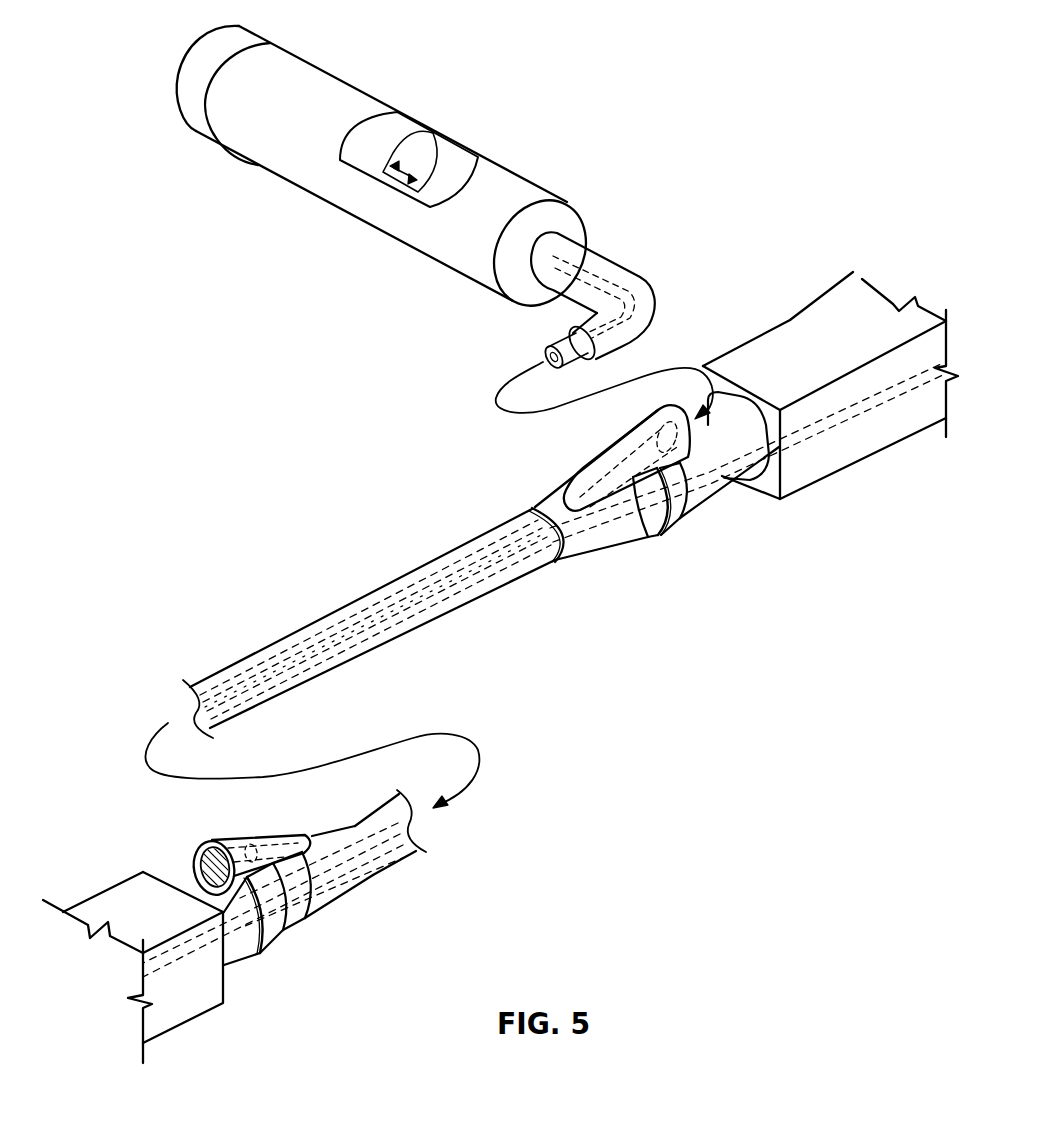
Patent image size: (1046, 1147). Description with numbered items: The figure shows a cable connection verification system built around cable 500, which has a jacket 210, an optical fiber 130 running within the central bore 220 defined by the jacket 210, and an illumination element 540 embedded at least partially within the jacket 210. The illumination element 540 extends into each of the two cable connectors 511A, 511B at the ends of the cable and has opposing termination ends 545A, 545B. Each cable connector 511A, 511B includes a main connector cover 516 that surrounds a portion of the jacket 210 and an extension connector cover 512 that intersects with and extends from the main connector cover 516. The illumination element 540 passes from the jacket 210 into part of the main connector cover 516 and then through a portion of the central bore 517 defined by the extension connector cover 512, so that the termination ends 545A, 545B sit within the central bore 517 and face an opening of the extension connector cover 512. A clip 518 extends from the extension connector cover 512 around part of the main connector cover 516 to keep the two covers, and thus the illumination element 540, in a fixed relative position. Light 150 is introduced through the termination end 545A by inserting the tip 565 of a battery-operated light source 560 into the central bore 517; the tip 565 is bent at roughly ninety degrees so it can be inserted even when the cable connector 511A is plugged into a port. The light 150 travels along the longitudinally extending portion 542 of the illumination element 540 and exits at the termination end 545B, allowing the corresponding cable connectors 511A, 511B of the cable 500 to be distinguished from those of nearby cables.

The light source 560 is at (300, 262).
The tip 565 is at (531, 325).
The extension connector cover 512 is at (593, 428).
The longitudinally extending portion 542 is at (453, 565).
The illumination element 540 is at (373, 617).
The central bore 220 is at (440, 600).
The optical fiber 130 is at (430, 632).
The jacket 210 is at (323, 667).
The main connector cover 516 is at (587, 578).
The clip 518 is at (678, 518).
The cable connector 511A is at (739, 501).
The central bore 517 is at (668, 440).
The termination end 545A is at (667, 450).
The cable 500 is at (578, 690).
The light 150 is at (147, 837).
The termination end 545B is at (236, 855).
The cable connector 511B is at (356, 922).